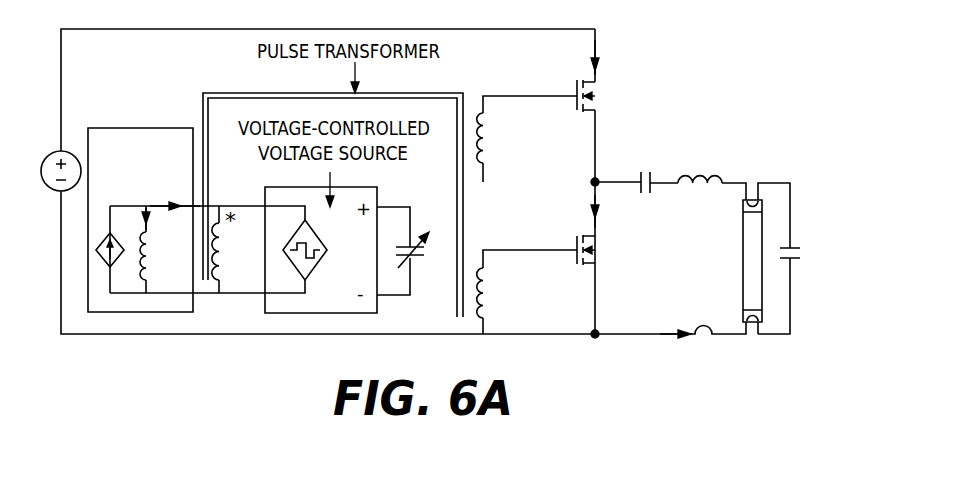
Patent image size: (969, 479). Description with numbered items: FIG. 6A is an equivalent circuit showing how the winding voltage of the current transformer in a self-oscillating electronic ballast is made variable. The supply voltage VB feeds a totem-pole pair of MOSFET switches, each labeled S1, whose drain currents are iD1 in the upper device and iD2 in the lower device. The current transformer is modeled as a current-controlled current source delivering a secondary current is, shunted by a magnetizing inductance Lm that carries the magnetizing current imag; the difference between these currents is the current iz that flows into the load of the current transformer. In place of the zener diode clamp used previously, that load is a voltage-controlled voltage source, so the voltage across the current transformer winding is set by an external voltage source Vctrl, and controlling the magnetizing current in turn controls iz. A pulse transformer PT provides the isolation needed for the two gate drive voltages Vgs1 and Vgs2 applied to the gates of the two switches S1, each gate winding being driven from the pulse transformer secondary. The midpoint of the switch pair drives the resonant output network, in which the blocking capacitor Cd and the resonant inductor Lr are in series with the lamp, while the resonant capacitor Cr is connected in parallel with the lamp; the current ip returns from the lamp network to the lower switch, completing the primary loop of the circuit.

The DC bus voltage source VB is at (49, 156).
The secondary current controlled source is is at (108, 239).
The zener diode current iz is at (175, 191).
The magnetizing current imag is at (164, 228).
The magnetizing inductance Lm is at (159, 259).
The pulse transformer primary PT is at (215, 251).
The external voltage source Vctrl is at (423, 261).
The MOSFET S1 is at (555, 207).
The upper switch drain current iD1 is at (580, 57).
The lower switch drain current iD2 is at (580, 211).
The upper gate-source voltage winding Vgs1 is at (519, 139).
The lower gate-source voltage winding Vgs2 is at (519, 296).
The DC blocking capacitor Cd is at (647, 169).
The resonant inductor Lr is at (700, 165).
The resonant capacitor Cr is at (803, 242).
The primary/lamp current ip is at (675, 319).
The fluorescent lamp is at (752, 261).